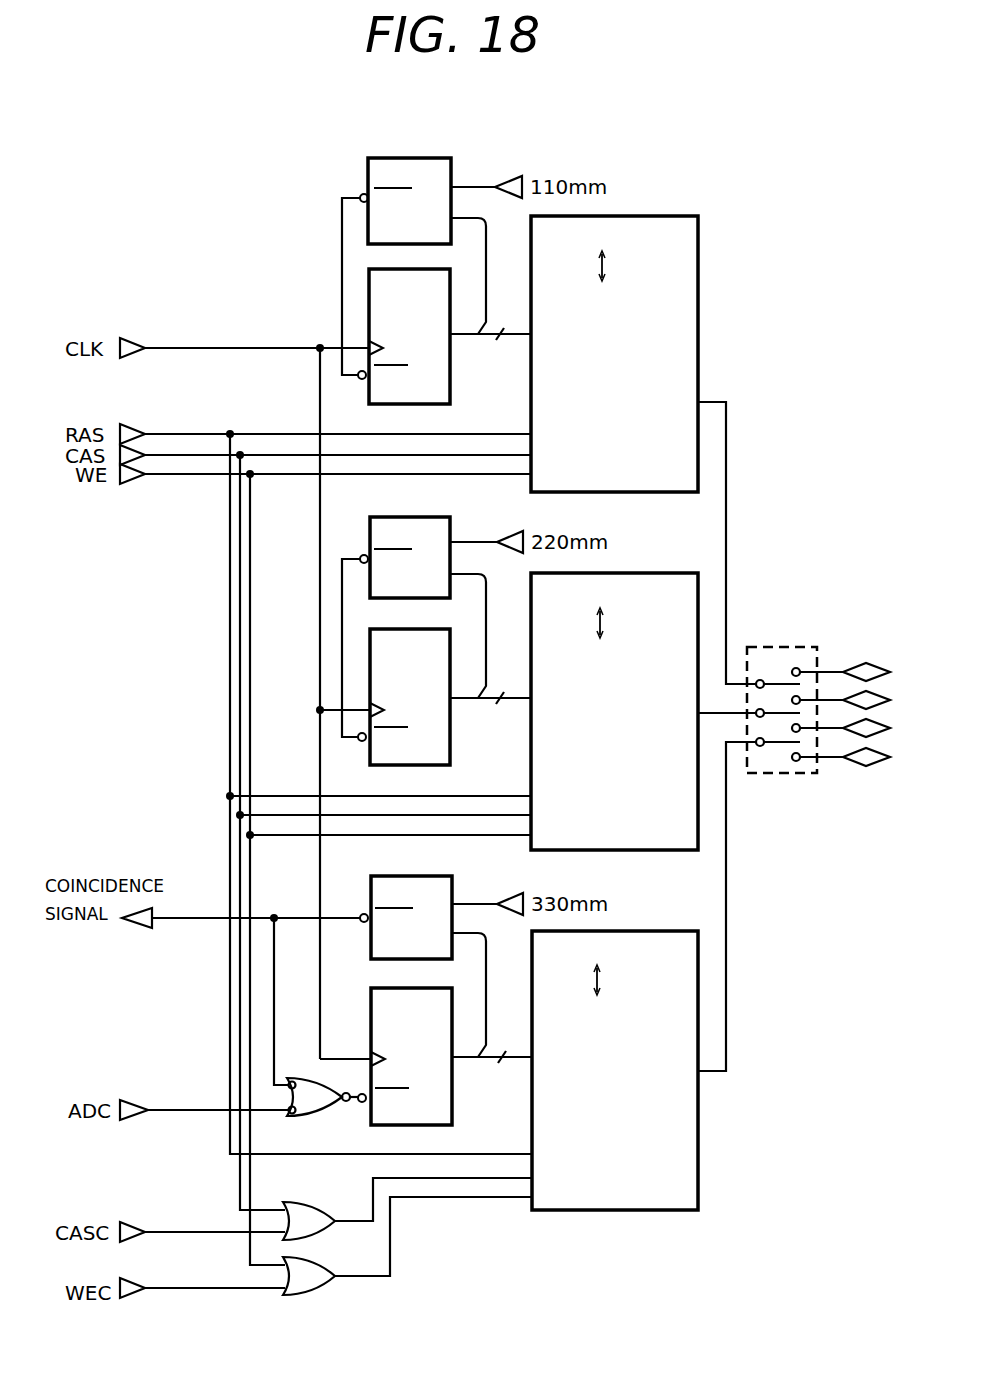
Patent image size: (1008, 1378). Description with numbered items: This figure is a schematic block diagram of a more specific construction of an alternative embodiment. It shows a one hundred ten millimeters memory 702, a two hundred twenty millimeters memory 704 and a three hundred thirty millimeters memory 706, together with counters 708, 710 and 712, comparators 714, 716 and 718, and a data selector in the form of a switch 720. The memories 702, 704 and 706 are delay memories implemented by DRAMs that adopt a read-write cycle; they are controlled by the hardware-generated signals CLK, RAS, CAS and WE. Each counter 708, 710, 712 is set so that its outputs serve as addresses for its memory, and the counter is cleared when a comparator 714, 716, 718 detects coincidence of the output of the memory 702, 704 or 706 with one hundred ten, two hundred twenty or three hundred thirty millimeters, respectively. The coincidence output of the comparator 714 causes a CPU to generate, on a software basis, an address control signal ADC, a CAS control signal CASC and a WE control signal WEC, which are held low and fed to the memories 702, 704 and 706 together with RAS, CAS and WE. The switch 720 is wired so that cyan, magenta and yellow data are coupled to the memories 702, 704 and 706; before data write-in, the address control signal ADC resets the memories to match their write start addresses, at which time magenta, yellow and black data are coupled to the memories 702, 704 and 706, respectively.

The 110 millimeters memory 702 is at (700, 353).
The 220 millimeters memory 704 is at (612, 852).
The 330 millimeters memory 706 is at (700, 1124).
The counter 708 is at (453, 1087).
The counter 710 is at (451, 727).
The counter 712 is at (452, 368).
The comparator 714 is at (452, 883).
The comparator 716 is at (451, 523).
The comparator 718 is at (403, 158).
The switch 720 is at (750, 646).